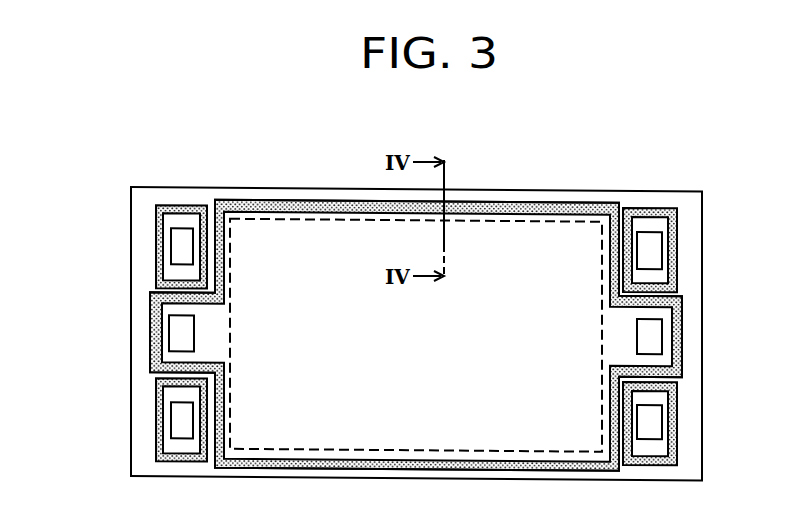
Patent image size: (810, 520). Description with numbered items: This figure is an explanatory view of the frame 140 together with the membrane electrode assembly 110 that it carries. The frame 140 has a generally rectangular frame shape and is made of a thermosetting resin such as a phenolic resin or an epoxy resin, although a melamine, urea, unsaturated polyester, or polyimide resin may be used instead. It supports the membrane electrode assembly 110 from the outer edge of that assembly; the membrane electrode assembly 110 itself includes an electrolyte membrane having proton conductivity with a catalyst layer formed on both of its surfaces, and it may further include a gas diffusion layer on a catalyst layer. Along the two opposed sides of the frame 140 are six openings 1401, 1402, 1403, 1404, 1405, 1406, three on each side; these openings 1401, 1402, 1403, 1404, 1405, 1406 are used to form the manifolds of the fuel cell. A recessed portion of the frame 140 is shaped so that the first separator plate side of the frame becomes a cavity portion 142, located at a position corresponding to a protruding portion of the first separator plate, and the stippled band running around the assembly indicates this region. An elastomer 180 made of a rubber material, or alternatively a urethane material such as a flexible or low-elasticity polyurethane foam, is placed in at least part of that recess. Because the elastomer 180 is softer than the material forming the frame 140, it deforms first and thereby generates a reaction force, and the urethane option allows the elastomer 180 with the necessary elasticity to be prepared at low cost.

The frame 140 is at (685, 193).
The cavity portion 142 is at (542, 201).
The elastomer 180 is at (614, 200).
The membrane electrode assembly 110 is at (263, 218).
The opening 1401 is at (172, 244).
The opening 1402 is at (661, 428).
The opening 1403 is at (170, 419).
The opening 1404 is at (661, 253).
The opening 1405 is at (170, 337).
The opening 1406 is at (661, 346).